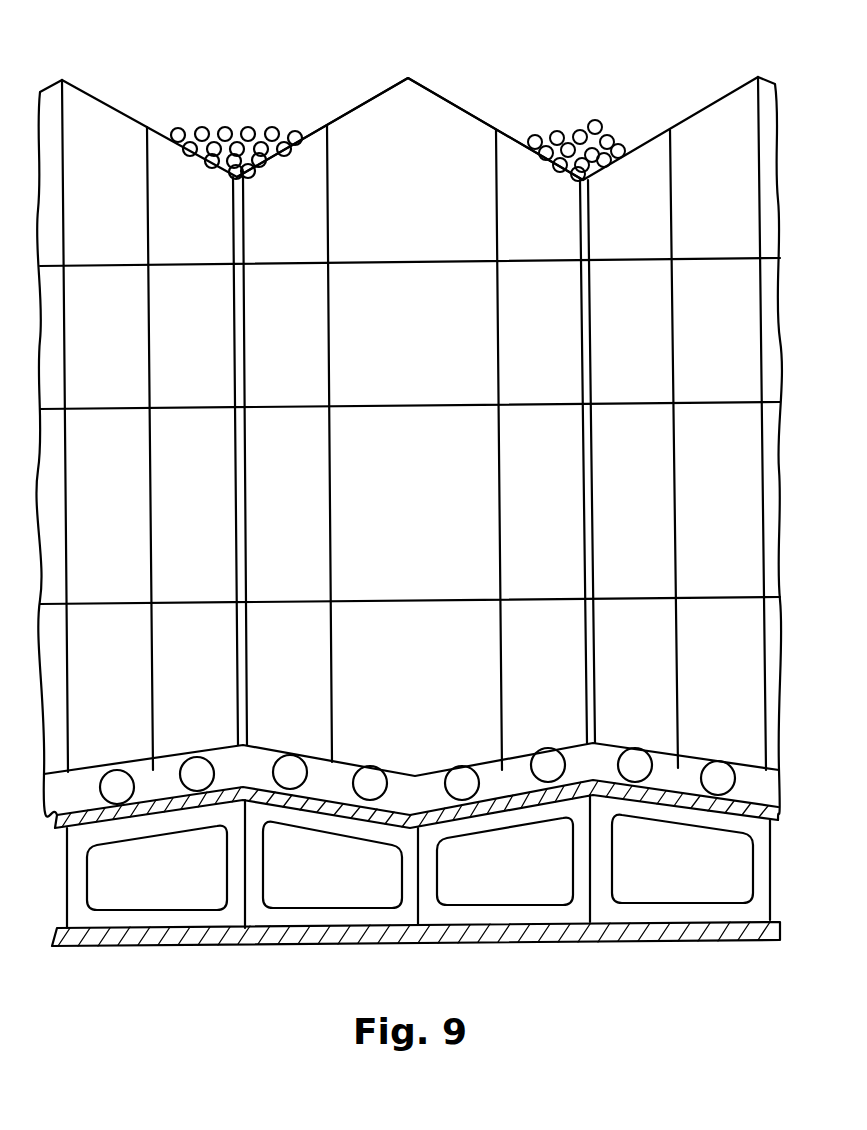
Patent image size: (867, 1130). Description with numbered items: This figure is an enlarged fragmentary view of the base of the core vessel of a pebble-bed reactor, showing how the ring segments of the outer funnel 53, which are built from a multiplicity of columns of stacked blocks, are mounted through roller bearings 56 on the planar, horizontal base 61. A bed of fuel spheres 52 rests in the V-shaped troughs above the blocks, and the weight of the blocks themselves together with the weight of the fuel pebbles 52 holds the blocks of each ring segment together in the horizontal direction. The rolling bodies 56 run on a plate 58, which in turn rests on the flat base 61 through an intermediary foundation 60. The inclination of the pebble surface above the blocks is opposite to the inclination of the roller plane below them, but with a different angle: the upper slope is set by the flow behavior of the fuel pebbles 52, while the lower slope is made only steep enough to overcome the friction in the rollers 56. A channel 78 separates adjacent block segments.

The fuel spheres 52 is at (597, 123).
The outer funnel-shaped part 53 is at (409, 78).
The channel between panel sections 78 is at (580, 207).
The rolling body 56 is at (462, 790).
The plate 58 is at (407, 818).
The foundation 60 is at (263, 913).
The horizontal flat base 61 is at (140, 940).